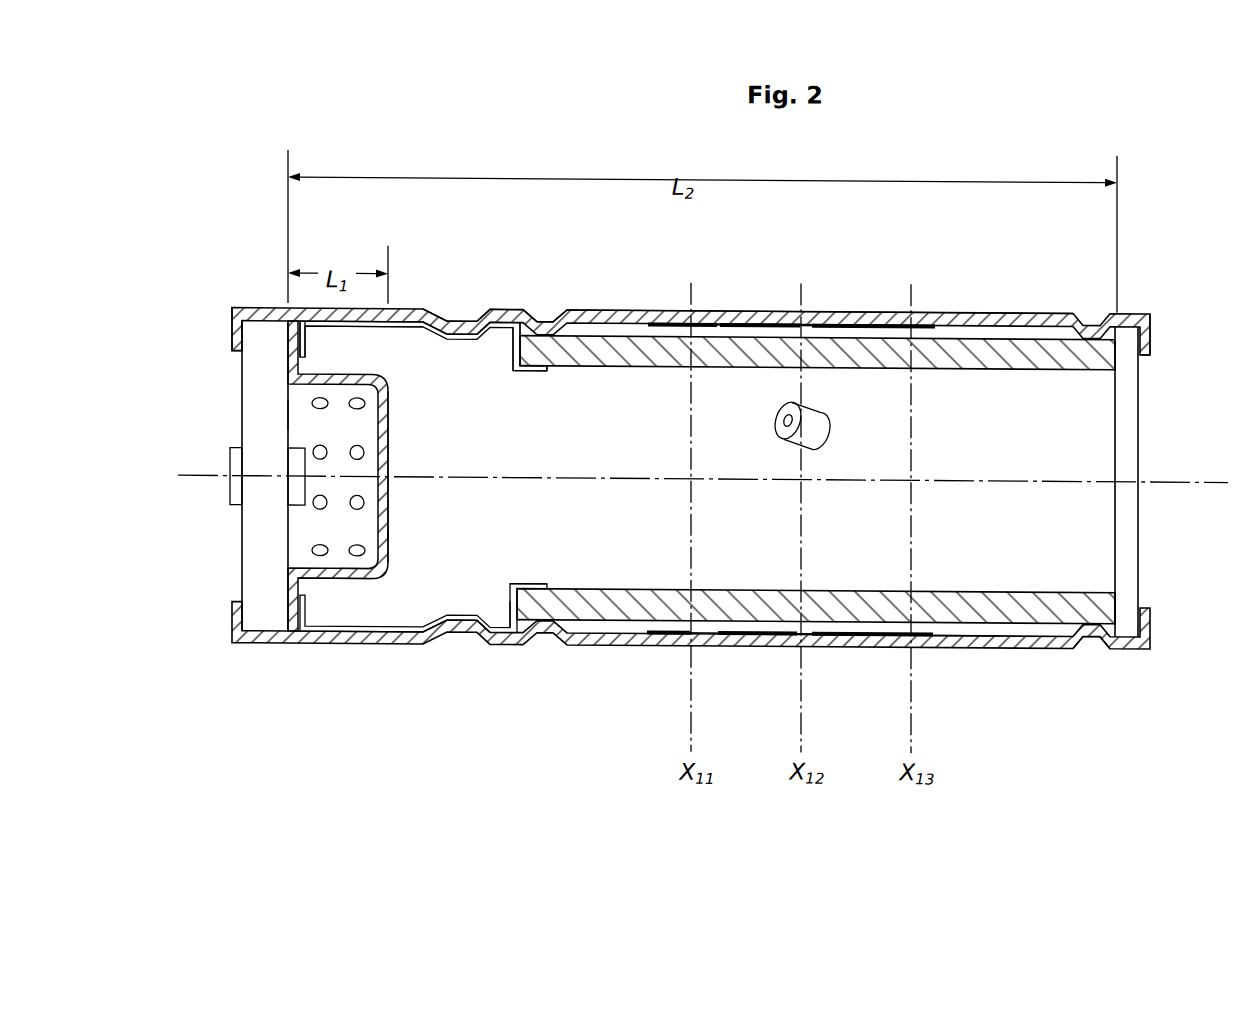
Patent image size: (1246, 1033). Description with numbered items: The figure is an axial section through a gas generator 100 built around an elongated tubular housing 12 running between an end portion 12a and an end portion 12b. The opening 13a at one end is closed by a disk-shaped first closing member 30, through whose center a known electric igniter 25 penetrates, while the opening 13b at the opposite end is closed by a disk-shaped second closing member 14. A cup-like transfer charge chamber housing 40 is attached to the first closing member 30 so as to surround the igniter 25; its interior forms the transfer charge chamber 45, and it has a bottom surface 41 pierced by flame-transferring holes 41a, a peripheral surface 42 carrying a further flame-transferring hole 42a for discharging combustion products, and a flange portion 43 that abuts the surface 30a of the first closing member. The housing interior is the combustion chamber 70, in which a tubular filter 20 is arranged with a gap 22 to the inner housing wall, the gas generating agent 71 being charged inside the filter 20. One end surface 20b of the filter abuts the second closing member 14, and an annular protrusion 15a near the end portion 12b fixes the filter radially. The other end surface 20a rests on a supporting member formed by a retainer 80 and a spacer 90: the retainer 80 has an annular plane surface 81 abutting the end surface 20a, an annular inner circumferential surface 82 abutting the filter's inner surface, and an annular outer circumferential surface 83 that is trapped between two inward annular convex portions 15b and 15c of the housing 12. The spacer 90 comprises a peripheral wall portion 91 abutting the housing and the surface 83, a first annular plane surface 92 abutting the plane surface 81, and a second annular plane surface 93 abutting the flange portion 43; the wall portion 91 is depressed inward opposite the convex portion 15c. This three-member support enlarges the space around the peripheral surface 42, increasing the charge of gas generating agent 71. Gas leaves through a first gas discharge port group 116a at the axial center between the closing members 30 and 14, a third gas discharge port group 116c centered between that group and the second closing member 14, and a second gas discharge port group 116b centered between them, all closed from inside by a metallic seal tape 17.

The tubular housing 12 is at (1001, 309).
The end portion 12a is at (232, 331).
The end portion 12b is at (1151, 330).
The opening 13a is at (237, 353).
The opening 13b is at (1143, 352).
The second closing member 14 is at (1127, 497).
The annular protrusion 15a is at (1090, 637).
The annular convex portion 15b is at (550, 312).
The annular convex portion 15c is at (463, 308).
The seal tape 17 is at (884, 316).
The tubular filter 20 is at (1010, 610).
The end surface 20a is at (513, 584).
The end surface 20b is at (1122, 600).
The gap 22 is at (962, 632).
The electric igniter 25 is at (297, 465).
The first closing member 30 is at (265, 568).
The surface 30a is at (289, 417).
The transfer charge chamber housing 40 is at (395, 491).
The bottom surface 41 is at (389, 447).
The flame-transferring holes 41a is at (389, 545).
The peripheral surface 42 is at (333, 580).
The flame-transferring hole 42a is at (357, 575).
The flange portion 43 is at (303, 613).
The transfer charge chamber 45 is at (326, 441).
The combustion chamber 70 is at (653, 524).
The gas generating agent 71 is at (829, 414).
The retainer 80 is at (520, 375).
The annular plane surface 81 is at (537, 312).
The annular inner circumferential surface 82 is at (538, 371).
The annular outer circumferential surface 83 is at (503, 310).
The spacer 90 is at (435, 341).
The peripheral wall portion 91 is at (400, 327).
The first annular plane surface 92 is at (512, 352).
The second annular plane surface 93 is at (305, 340).
The gas generator 100 is at (834, 288).
The first gas discharge port group 116a is at (690, 316).
The second gas discharge port group 116b is at (795, 316).
The third gas discharge port group 116c is at (915, 316).